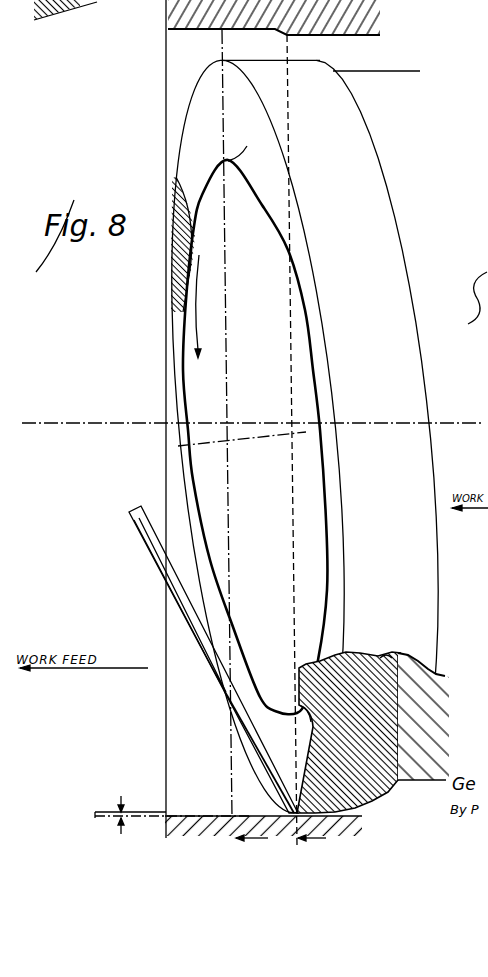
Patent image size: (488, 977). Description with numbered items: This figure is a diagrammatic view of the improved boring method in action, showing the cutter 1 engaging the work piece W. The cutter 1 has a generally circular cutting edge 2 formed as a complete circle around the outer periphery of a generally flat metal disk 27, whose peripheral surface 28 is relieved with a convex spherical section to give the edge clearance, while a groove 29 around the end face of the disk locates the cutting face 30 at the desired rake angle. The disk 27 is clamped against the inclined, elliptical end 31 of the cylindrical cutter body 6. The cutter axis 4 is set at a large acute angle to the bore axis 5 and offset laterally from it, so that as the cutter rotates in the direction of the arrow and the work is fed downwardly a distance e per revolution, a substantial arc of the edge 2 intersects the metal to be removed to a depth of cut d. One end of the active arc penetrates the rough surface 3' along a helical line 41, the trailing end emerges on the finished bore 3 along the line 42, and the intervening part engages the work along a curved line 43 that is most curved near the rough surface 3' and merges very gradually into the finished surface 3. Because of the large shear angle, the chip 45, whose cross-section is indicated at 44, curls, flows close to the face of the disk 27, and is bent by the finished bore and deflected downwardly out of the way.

The cutter 1 is at (158, 692).
The cutting edge 2 is at (183, 488).
The finished bore 3 is at (274, 408).
The rough surface 3' is at (341, 436).
The cutter axis 4 is at (180, 452).
The bore axis 5 is at (252, 413).
The cutter body 6 is at (432, 717).
The metal disk 27 is at (348, 672).
The peripheral surface 28 is at (400, 395).
The groove 29 is at (115, 15).
The cutting face 30 is at (74, 20).
The end of body 31 is at (387, 658).
The helical line 41 is at (293, 618).
The line of emergence 42 is at (233, 737).
The curved line of engagement 43 is at (230, 816).
The chip cross-section 44 is at (272, 812).
The chip 45 is at (173, 603).
The work piece W is at (172, 827).
The depth of cut d is at (120, 808).
The feed distance e is at (281, 840).